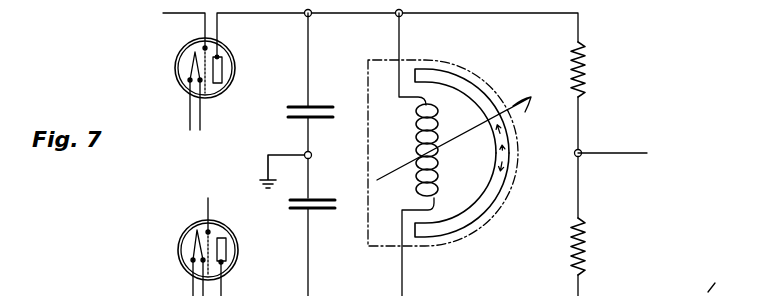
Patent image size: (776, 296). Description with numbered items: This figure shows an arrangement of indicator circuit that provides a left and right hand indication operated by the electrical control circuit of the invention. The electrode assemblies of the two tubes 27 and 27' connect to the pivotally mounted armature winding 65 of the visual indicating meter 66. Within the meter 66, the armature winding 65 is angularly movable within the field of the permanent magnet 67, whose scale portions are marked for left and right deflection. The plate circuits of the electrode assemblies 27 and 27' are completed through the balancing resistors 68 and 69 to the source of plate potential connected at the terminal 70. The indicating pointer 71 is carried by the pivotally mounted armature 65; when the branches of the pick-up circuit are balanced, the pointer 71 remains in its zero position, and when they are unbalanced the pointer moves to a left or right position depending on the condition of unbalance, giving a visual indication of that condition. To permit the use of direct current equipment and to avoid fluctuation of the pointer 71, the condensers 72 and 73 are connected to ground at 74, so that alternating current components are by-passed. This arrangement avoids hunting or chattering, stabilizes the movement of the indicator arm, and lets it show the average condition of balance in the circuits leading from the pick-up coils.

The tube 27 is at (221, 84).
The tube 27' is at (227, 247).
The pivotally mounted armature winding 65 is at (440, 178).
The visual indicating meter 66 is at (489, 76).
The permanent magnet 67 is at (460, 228).
The balancing resistor 68 is at (590, 79).
The balancing resistor 69 is at (593, 256).
The source of plate potential connection 70 is at (612, 157).
The indicating pointer 71 is at (523, 116).
The condenser 72 is at (348, 110).
The condenser 73 is at (326, 212).
The ground 74 is at (262, 176).